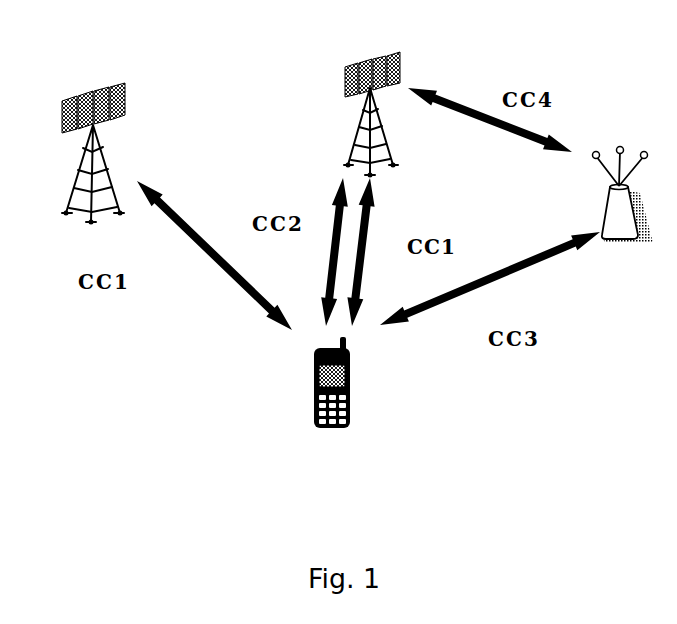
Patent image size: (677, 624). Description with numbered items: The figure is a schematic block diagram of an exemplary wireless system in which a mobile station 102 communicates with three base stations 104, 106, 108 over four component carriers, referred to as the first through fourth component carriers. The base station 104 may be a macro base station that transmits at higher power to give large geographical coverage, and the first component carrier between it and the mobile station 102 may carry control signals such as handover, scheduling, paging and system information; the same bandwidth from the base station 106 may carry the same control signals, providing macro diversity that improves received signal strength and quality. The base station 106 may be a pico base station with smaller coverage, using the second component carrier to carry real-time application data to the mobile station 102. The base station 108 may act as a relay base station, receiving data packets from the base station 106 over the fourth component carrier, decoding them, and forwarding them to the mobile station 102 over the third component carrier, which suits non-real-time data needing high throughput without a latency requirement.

The mobile station 102 is at (349, 405).
The base station 104 is at (86, 140).
The base station 106 is at (369, 96).
The base station 108 is at (626, 174).